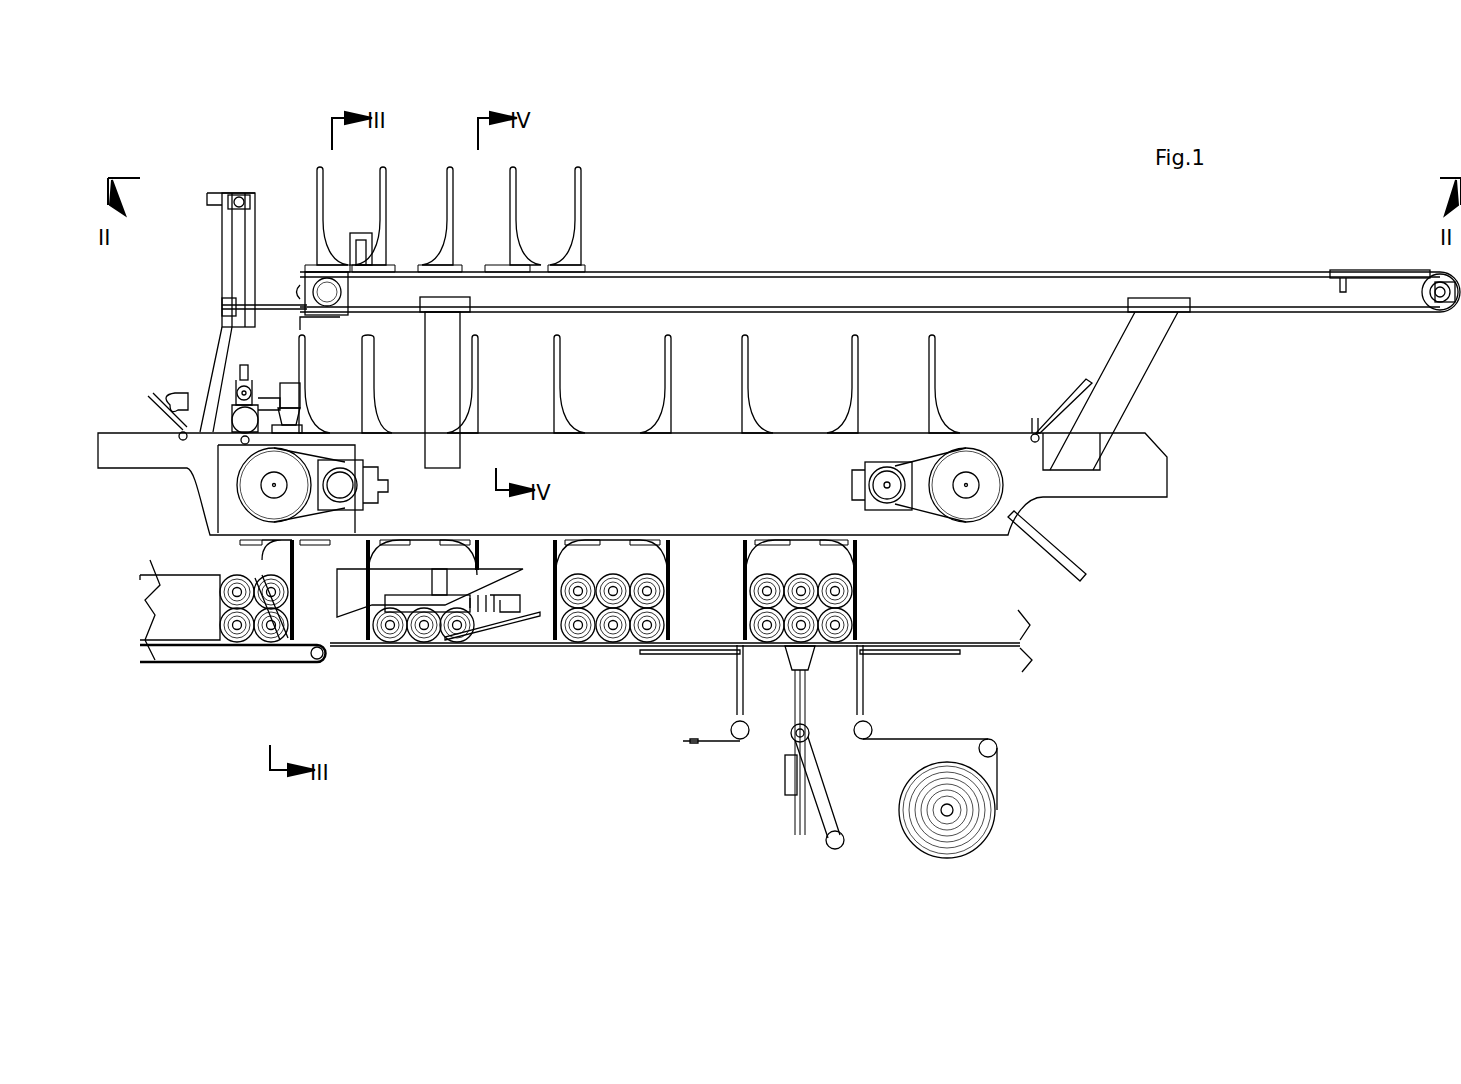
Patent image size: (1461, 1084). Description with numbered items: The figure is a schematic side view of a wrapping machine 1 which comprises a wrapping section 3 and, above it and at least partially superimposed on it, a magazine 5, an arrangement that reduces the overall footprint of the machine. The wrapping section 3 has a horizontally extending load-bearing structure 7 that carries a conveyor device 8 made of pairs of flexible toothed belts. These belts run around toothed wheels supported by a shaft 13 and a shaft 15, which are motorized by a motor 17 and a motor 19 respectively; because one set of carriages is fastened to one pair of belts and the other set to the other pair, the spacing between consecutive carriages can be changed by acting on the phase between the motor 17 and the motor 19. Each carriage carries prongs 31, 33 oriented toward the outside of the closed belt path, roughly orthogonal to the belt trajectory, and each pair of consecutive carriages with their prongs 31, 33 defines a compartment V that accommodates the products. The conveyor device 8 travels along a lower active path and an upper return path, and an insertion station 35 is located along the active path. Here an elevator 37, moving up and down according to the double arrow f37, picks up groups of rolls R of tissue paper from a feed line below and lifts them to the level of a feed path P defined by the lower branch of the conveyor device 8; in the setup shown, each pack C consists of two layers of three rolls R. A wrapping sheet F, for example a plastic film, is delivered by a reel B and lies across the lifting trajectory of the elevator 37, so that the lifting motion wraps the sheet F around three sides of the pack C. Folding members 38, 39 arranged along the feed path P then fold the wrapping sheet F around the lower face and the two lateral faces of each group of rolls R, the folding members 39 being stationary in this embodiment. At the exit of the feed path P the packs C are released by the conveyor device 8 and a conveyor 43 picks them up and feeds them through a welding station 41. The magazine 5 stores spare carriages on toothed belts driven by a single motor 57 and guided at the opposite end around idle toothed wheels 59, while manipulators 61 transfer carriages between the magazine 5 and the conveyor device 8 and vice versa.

The wrapping machine 1 is at (1296, 446).
The wrapping section 3 is at (1216, 492).
The magazine 5 is at (1268, 243).
The load-bearing structure 7 is at (1133, 495).
The conveyor device 8 is at (1165, 443).
The shaft 13 is at (262, 485).
The shaft 15 is at (968, 470).
The motor 17 is at (360, 487).
The motor 19 is at (868, 470).
The prong 31 is at (316, 175).
The prong 33 is at (376, 175).
The insertion station 35 is at (833, 733).
The elevator 37 is at (780, 648).
The folding member 38 is at (697, 655).
The folding member 39 is at (350, 640).
The welding station 41 is at (160, 615).
The conveyor 43 is at (280, 660).
The motor 57 is at (312, 285).
The idle toothed wheel 59 is at (1444, 310).
The manipulator 61 is at (256, 389).
The reel B is at (965, 856).
The pack C is at (248, 573).
The feed path P is at (340, 625).
The roll R is at (245, 642).
The compartment V is at (625, 398).
The wrapping sheet F is at (715, 741).
The double arrow f37 is at (820, 715).